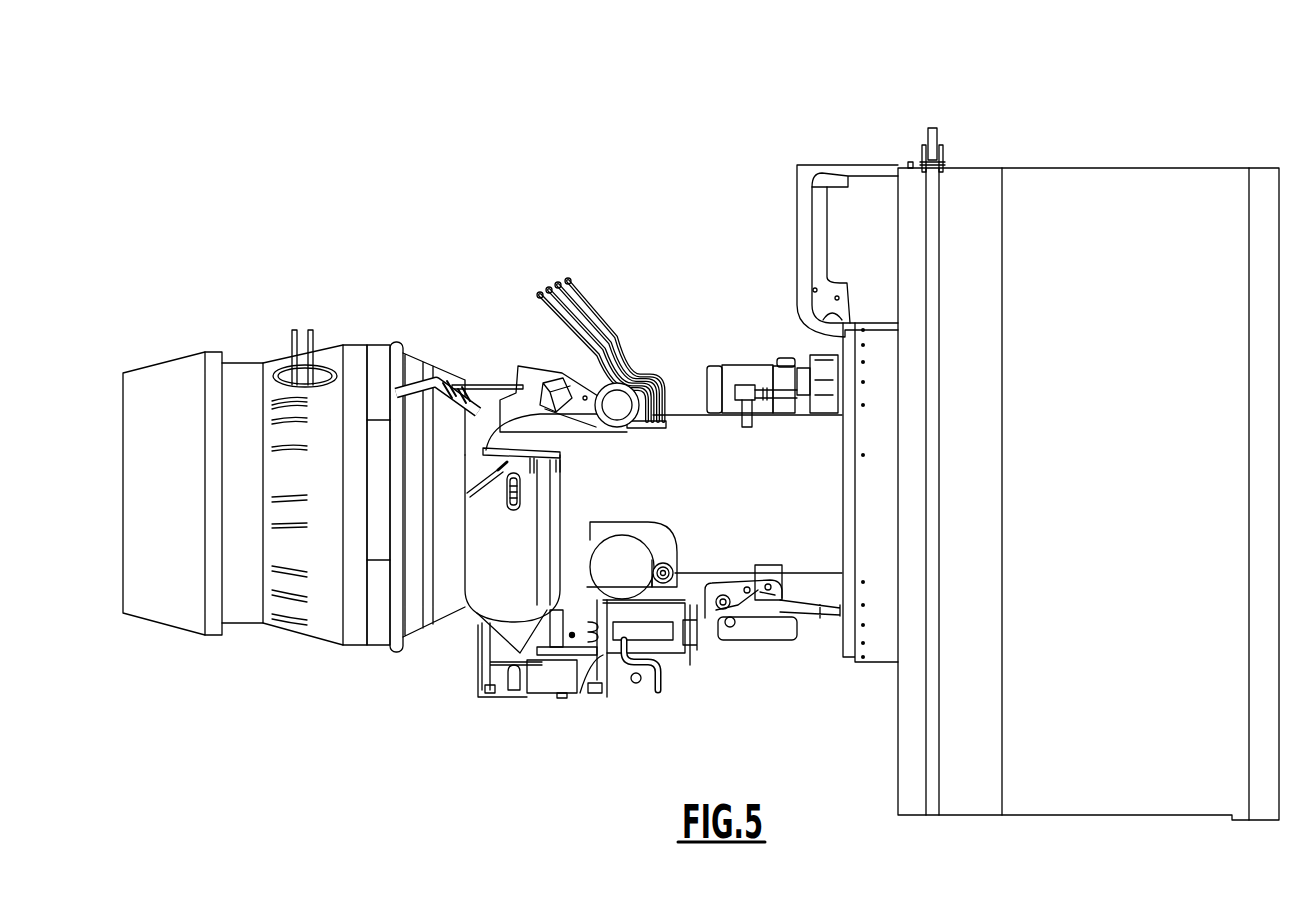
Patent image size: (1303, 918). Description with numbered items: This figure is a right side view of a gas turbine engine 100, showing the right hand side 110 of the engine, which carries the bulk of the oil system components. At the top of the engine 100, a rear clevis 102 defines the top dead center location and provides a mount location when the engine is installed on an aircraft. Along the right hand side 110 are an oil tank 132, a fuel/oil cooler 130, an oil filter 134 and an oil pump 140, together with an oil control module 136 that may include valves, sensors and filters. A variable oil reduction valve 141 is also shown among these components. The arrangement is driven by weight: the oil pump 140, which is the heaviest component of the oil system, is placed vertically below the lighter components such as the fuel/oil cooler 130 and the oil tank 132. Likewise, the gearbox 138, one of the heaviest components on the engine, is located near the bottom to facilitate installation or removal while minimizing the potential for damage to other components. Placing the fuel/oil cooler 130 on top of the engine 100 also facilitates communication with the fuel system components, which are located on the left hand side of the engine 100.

The gas turbine engine 100 is at (476, 138).
The rear clevis 102 is at (932, 128).
The right hand side 110 is at (478, 317).
The fuel/oil cooler 130 is at (748, 380).
The oil tank 132 is at (488, 495).
The oil filter 134 is at (616, 577).
The oil control module 136 is at (621, 672).
The gearbox 138 is at (693, 653).
The oil pump 140 is at (783, 630).
The variable oil reduction valve 141 is at (630, 550).